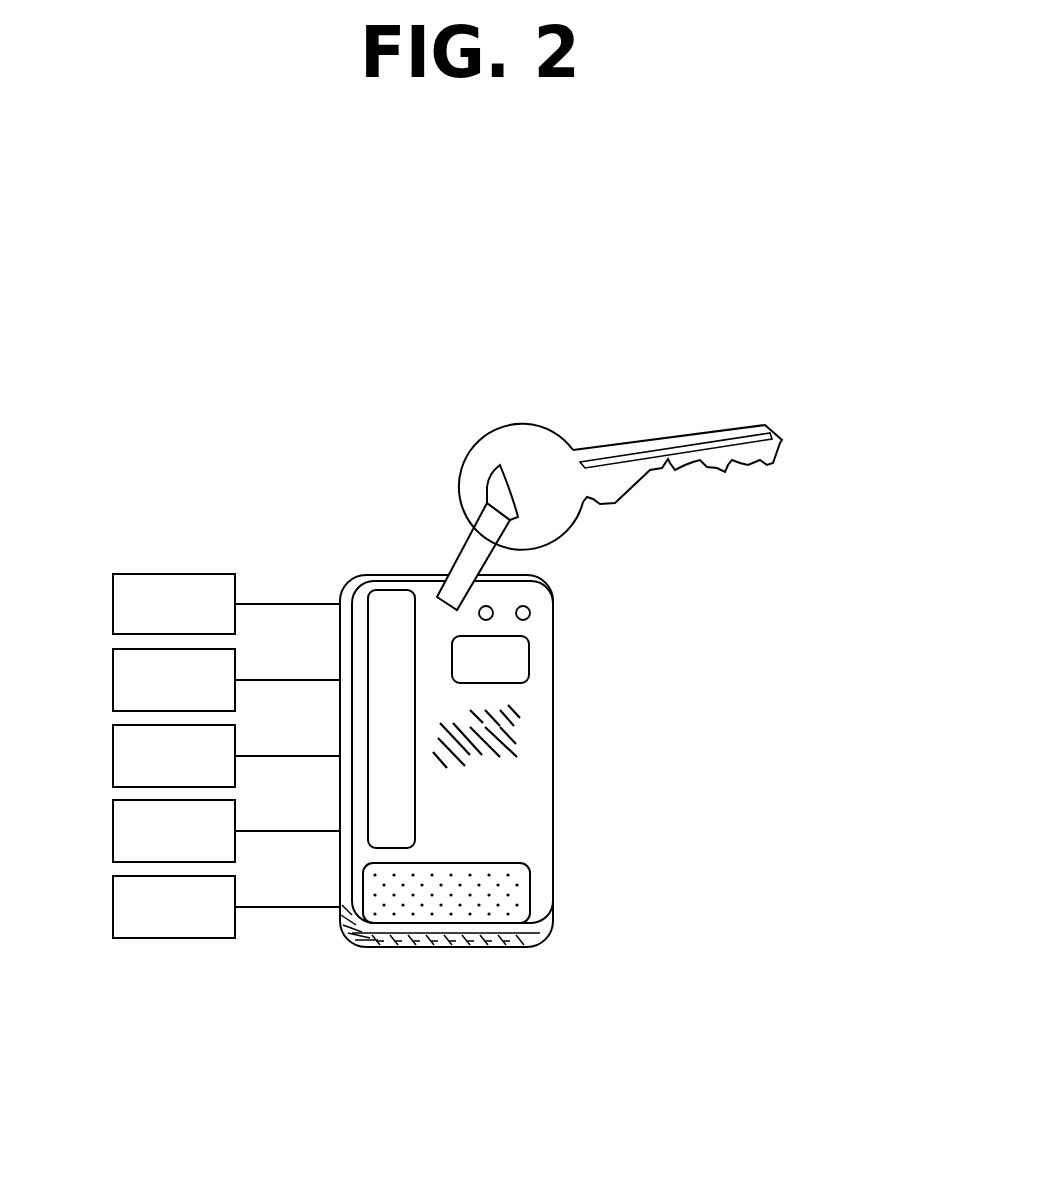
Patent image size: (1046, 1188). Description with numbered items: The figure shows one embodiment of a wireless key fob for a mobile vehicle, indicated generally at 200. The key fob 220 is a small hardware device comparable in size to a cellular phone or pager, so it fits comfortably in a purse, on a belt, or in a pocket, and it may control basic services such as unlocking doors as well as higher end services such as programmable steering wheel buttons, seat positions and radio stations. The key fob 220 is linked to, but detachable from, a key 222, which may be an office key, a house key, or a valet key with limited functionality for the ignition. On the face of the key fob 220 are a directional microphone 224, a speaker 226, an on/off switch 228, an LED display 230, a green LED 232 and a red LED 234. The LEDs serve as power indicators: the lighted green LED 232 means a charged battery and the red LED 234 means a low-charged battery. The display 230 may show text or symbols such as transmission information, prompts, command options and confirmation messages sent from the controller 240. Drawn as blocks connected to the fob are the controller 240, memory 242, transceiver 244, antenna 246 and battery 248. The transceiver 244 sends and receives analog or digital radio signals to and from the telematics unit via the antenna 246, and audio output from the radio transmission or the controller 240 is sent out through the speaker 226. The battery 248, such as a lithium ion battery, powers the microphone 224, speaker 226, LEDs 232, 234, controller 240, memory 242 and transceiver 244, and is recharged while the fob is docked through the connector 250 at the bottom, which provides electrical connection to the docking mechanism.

The wireless key fob system embodiment 200 is at (86, 211).
The key fob 220 is at (591, 928).
The key 222 is at (560, 426).
The directional microphone 224 is at (531, 868).
The speaker 226 is at (533, 905).
The on/off switch 228 is at (531, 660).
The LED display 230 is at (388, 590).
The green LED 232 is at (489, 605).
The red LED 234 is at (525, 605).
The controller 240 is at (226, 604).
The memory 242 is at (226, 680).
The transceiver 244 is at (226, 756).
The antenna 246 is at (226, 831).
The battery 248 is at (226, 907).
The connector 250 is at (440, 948).